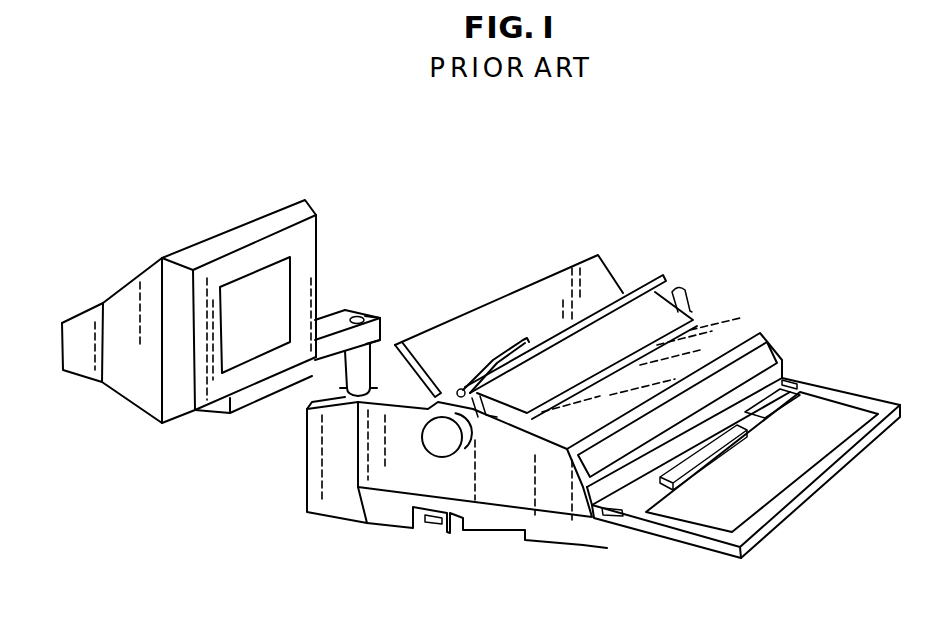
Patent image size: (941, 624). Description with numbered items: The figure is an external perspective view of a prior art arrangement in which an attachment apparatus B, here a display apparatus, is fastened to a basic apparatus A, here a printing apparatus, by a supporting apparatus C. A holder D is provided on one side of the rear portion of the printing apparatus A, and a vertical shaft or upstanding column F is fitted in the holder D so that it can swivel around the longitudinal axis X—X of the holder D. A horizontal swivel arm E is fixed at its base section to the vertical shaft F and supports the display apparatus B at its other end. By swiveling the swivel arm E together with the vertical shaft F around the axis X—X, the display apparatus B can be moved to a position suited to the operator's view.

The basic apparatus A is at (733, 307).
The attachment apparatus B is at (240, 212).
The supporting apparatus C is at (388, 322).
The holder D is at (341, 392).
The horizontal swivel arm E is at (338, 318).
The vertical shaft F is at (373, 345).
The longitudinal axis X— X is at (355, 302).